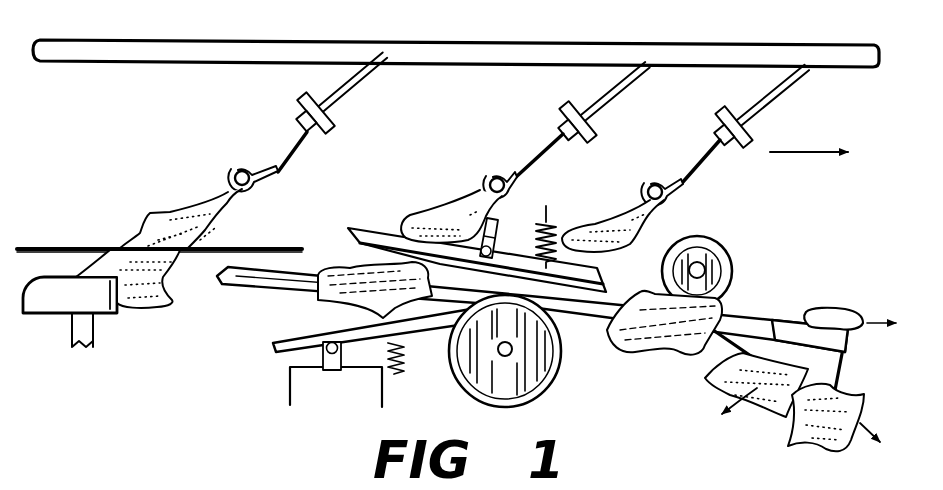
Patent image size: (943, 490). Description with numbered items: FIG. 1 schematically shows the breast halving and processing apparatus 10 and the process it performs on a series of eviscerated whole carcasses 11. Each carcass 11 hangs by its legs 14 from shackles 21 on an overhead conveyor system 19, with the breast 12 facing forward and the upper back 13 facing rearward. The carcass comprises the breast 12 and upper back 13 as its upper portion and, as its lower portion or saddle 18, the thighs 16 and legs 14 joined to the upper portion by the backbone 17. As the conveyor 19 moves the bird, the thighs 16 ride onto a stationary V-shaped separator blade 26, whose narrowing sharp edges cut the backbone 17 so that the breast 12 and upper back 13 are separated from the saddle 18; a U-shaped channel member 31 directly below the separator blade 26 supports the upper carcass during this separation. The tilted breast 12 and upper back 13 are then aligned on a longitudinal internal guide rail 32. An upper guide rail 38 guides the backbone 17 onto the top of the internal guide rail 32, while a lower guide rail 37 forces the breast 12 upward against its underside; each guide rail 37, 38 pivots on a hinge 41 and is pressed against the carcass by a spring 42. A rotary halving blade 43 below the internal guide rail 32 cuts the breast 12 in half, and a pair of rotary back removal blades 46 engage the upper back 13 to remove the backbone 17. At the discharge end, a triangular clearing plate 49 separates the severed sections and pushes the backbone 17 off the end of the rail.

The breast halving and processing apparatus 10 is at (186, 424).
The whole carcass 11 is at (100, 187).
The breast 12 is at (316, 301).
The upper back 13 is at (72, 264).
The legs 14 is at (214, 192).
The thighs 16 is at (165, 212).
The backbone 17 is at (832, 315).
The saddle 18 is at (444, 203).
The overhead conveyor system 19 is at (561, 42).
The shackles 21 is at (283, 142).
The V-shaped separator blade 26 is at (96, 246).
The U-shaped channel member 31 is at (102, 315).
The internal guide rail 32 is at (248, 285).
The lower guide rail 37 is at (270, 346).
The upper guide rail 38 is at (373, 232).
The hinge 41 is at (497, 229).
The spring 42 is at (410, 387).
The rotary halving blade 43 is at (535, 378).
The rotary back removal blades 46 is at (696, 258).
The clearing plate 49 is at (828, 367).